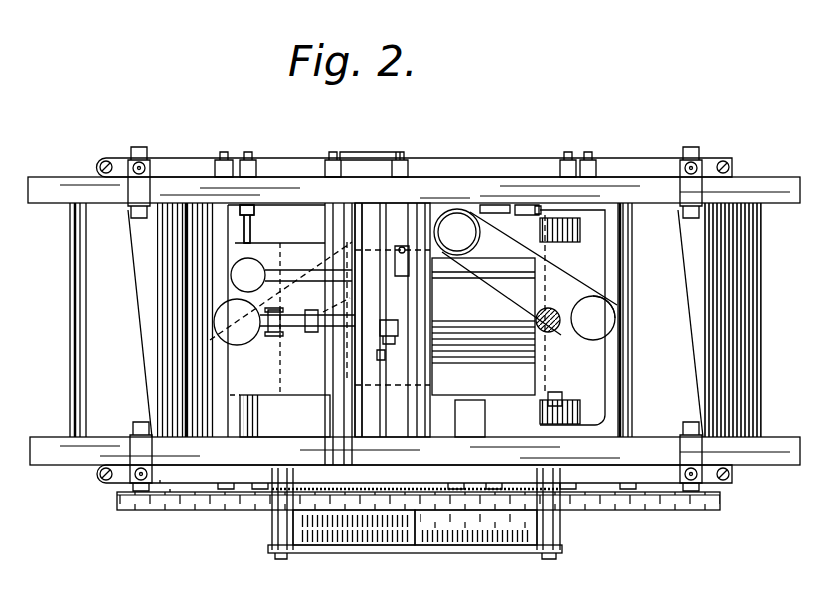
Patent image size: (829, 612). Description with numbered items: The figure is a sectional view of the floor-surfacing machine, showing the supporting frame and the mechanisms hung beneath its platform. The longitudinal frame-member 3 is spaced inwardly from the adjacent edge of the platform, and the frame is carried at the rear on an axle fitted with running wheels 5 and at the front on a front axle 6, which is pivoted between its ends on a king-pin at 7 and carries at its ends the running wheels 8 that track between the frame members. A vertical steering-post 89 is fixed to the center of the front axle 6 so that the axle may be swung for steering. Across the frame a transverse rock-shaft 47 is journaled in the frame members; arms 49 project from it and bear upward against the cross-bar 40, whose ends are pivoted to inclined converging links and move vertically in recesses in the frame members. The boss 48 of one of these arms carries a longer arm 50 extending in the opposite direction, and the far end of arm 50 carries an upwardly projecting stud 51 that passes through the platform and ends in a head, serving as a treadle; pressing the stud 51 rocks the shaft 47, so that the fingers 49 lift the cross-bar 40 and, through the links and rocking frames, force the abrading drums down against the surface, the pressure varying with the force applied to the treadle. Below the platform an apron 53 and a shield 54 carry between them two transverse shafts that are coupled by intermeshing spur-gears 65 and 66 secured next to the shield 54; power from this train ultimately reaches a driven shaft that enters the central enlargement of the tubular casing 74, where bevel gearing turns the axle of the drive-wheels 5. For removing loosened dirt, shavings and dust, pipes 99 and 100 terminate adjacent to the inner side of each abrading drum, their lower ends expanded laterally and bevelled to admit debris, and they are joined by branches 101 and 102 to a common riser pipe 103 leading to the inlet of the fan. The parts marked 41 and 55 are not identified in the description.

The longitudinal frame-member 3 is at (433, 598).
The running wheels 5 is at (252, 396).
The front axle 6 is at (562, 396).
The king-pin 7 is at (560, 330).
The running wheels 8 is at (560, 396).
The cross-bar 40 is at (470, 300).
The lower block 41 is at (462, 440).
The transverse rock-shaft 47 is at (380, 328).
The boss 48 is at (398, 249).
The arms 49 is at (440, 420).
The arm 50 is at (282, 272).
The stud 51 is at (250, 246).
The apron 53 is at (272, 505).
The shield 54 is at (310, 556).
The support post 55 is at (585, 530).
The spur-gear 65 is at (370, 548).
The spur-gear 66 is at (478, 555).
The tubular casing 74 is at (272, 333).
The steering-post 89 is at (518, 336).
The pipe 99 is at (192, 340).
The pipe 100 is at (614, 335).
The branch 101 is at (443, 213).
The branch 102 is at (520, 200).
The riser pipe 103 is at (457, 227).